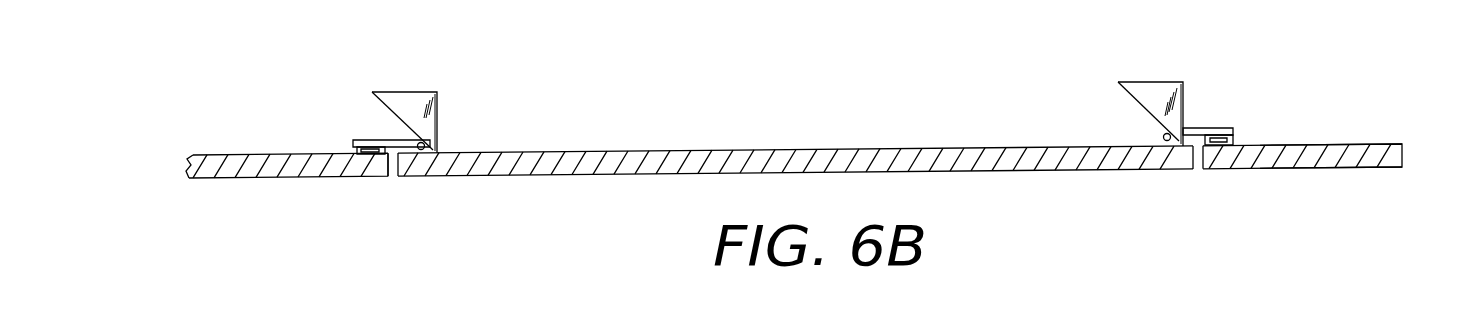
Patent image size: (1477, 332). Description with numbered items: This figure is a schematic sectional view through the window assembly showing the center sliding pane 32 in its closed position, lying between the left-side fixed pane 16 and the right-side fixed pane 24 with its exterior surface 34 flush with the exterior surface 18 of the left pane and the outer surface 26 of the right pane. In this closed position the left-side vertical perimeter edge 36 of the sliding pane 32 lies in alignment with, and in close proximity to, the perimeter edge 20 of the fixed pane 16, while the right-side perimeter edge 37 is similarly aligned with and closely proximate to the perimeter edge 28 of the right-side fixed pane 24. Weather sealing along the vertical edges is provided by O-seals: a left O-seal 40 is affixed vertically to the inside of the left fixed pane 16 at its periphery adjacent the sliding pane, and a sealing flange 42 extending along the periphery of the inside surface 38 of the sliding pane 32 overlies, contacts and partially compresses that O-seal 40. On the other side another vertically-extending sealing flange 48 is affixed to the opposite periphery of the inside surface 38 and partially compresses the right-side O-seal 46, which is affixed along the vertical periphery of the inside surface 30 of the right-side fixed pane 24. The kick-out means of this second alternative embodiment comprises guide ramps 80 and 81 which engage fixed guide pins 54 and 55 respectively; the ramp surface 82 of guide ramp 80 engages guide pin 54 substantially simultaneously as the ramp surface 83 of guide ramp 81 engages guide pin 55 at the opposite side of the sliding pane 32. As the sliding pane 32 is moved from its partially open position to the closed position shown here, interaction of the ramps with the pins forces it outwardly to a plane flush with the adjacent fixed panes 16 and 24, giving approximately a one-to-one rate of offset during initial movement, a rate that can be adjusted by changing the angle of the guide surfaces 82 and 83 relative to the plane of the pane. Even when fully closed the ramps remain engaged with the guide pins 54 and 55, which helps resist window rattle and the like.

The left-side fixed pane 16 is at (188, 164).
The exterior surface 18 is at (250, 180).
The perimeter edge 20 is at (392, 181).
The left-side vertical perimeter edge 36 is at (399, 180).
The center sliding pane 32 is at (740, 150).
The inside surface 38 is at (592, 152).
The exterior surface 34 is at (620, 176).
The right-side perimeter edge 37 is at (1191, 171).
The perimeter edge 28 is at (1204, 171).
The right-side fixed pane 24 is at (1403, 152).
The inside surface 30 is at (1329, 145).
The outer surface 26 is at (1322, 168).
The guide ramp 80 is at (413, 102).
The ramp surface 82 is at (380, 104).
The guide pin 54 is at (437, 130).
The sealing flange 42 is at (367, 140).
The left O-seal 40 is at (356, 149).
The guide ramp 81 is at (1148, 88).
The ramp surface 83 is at (1132, 100).
The guide pin 55 is at (1162, 136).
The sealing flange 48 is at (1205, 128).
The right-side O-seal 46 is at (1237, 140).